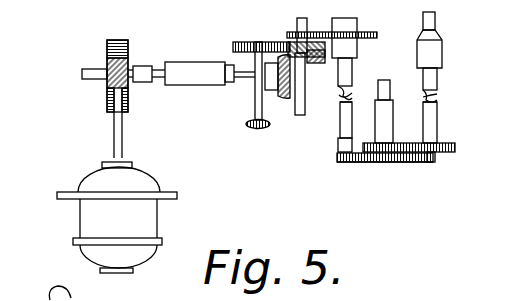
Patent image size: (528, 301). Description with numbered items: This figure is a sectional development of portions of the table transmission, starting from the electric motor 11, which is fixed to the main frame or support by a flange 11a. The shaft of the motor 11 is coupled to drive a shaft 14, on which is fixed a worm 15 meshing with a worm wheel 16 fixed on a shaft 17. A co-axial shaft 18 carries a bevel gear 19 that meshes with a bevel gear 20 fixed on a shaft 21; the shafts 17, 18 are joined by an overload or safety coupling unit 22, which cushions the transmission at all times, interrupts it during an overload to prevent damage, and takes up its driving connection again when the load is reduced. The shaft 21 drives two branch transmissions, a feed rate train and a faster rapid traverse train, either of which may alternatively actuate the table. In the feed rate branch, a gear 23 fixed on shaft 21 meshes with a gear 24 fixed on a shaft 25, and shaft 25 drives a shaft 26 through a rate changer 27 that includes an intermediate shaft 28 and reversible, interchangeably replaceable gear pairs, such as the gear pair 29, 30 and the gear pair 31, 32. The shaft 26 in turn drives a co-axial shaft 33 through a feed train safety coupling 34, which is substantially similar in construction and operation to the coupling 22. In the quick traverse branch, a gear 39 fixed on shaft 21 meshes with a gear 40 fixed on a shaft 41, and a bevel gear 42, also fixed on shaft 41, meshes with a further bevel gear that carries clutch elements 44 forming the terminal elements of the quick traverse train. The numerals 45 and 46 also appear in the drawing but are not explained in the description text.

The motor 11 is at (137, 226).
The flange 11a is at (163, 196).
The shaft 14 is at (121, 121).
The worm 15 is at (108, 66).
The worm wheel 16 is at (135, 44).
The shaft 17 is at (92, 80).
The co-axial shaft 18 is at (237, 78).
The bevel gear 19 is at (288, 102).
The bevel gear 20 is at (308, 63).
The shaft 21 is at (305, 102).
The overload or safety coupling unit 22 is at (194, 78).
The gear 23 is at (307, 33).
The gear 24 is at (357, 32).
The shaft 25 is at (348, 96).
The shaft 26 is at (437, 132).
The rate changer 27 is at (409, 158).
The intermediate shaft 28 is at (399, 126).
The gear 29 is at (345, 163).
The gear 30 is at (372, 163).
The gear 31 is at (372, 145).
The gear 32 is at (446, 152).
The co-axial shaft 33 is at (434, 21).
The feed train safety coupling 34 is at (432, 53).
The gear 39 is at (288, 42).
The gear 40 is at (257, 42).
The shaft 41 is at (255, 107).
The bevel gear 42 is at (266, 129).
The clutch elements 44 is at (233, 3).
The rack 45 is at (251, 8).
The rack 46 is at (322, 19).